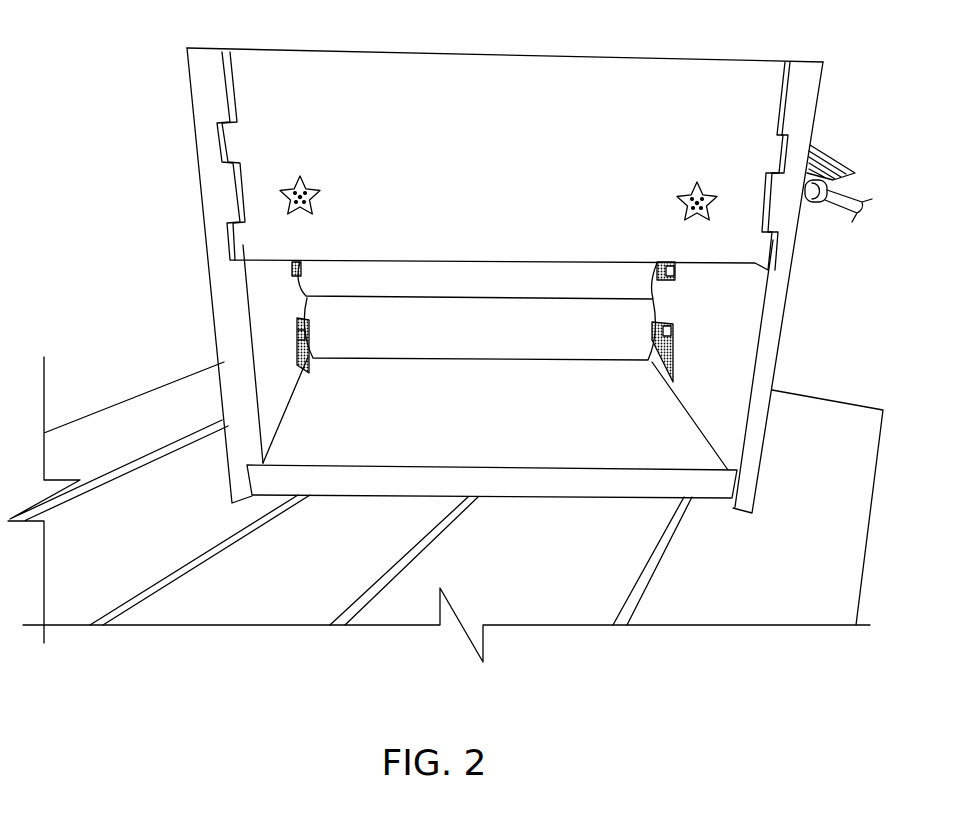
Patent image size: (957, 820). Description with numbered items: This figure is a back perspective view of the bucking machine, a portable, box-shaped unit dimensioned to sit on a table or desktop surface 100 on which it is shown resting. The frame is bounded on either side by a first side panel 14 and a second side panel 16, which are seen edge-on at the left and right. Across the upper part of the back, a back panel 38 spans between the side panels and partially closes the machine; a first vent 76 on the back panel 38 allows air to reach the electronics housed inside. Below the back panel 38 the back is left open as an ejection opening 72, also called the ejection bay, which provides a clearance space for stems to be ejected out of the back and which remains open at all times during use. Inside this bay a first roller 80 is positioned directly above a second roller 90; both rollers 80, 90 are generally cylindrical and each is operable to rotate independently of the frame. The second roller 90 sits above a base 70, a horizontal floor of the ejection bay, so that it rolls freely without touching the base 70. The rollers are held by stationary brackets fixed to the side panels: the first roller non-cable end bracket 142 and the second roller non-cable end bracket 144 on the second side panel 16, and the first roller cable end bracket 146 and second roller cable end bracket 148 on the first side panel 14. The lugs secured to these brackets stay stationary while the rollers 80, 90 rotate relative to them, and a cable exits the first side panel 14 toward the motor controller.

The first side panel 14 is at (783, 222).
The second side panel 16 is at (223, 302).
The back panel 38 is at (512, 131).
The base 70 is at (350, 480).
The ejection opening 72 is at (658, 445).
The first vent 76 is at (699, 185).
The first roller 80 is at (427, 280).
The second roller 90 is at (558, 340).
The surface 100 is at (98, 549).
The first roller non-cable end bracket 142 is at (292, 262).
The second roller non-cable end bracket 144 is at (297, 320).
The first roller cable end bracket 146 is at (676, 272).
The second roller cable end bracket 148 is at (674, 332).